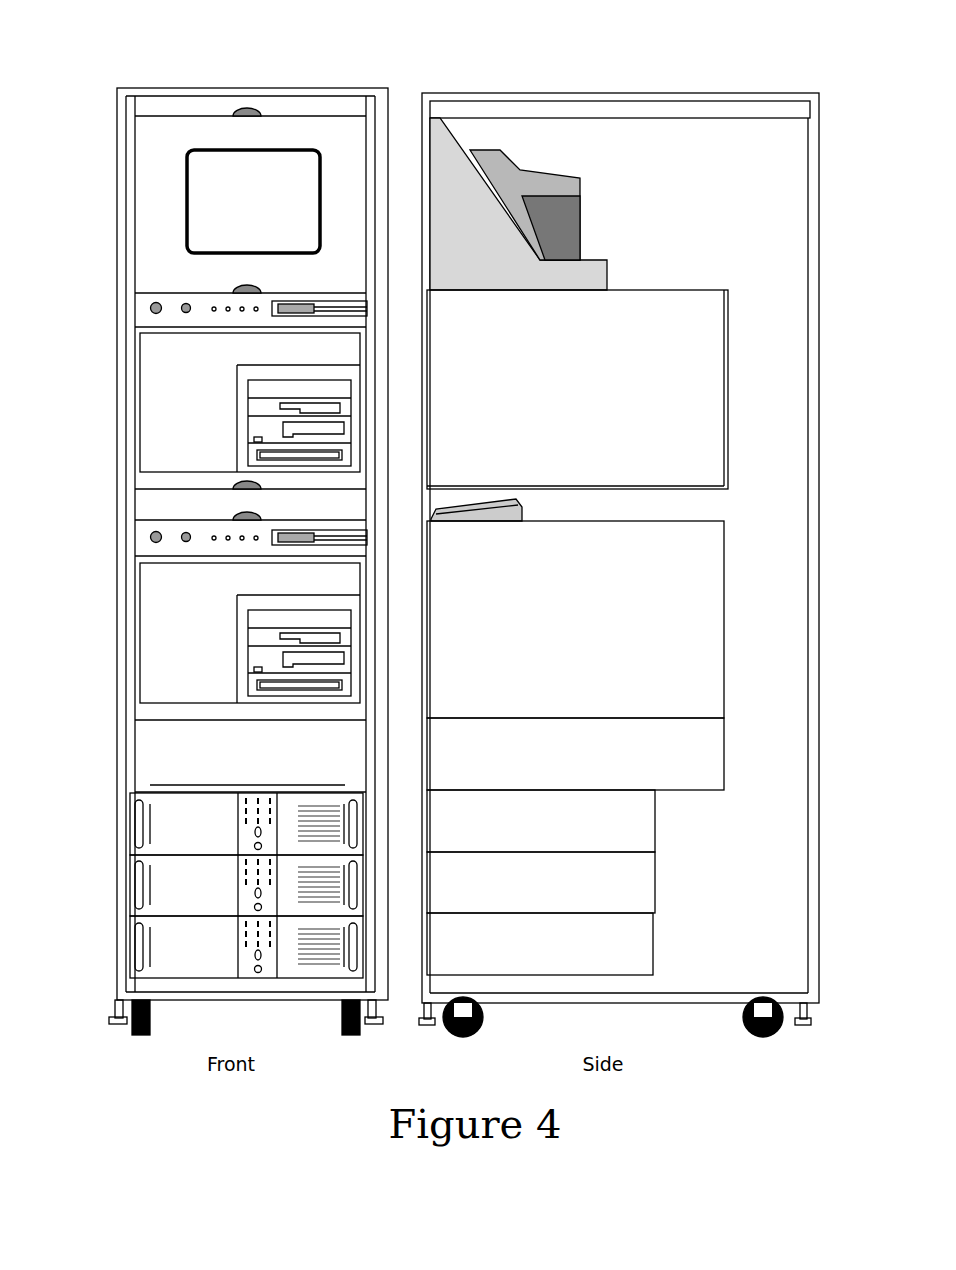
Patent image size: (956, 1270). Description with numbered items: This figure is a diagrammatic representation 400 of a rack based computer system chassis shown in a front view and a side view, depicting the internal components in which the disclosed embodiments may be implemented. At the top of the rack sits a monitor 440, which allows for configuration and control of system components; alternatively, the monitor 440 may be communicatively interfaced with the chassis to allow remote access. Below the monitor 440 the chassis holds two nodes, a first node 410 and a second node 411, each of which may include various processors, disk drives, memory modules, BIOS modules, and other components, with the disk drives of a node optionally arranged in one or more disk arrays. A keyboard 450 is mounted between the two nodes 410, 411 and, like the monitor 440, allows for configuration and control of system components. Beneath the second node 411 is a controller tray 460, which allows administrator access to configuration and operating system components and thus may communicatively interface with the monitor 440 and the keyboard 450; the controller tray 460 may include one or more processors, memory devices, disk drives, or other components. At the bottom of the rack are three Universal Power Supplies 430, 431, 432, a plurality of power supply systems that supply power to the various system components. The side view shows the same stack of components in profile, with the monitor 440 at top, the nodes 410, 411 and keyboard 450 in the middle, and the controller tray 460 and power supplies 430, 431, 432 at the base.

The diagrammatic representation 400 is at (428, 22).
The monitor 440 is at (371, 217).
The node 410 is at (434, 389).
The node 411 is at (432, 619).
The keyboard 450 is at (522, 510).
The controller tray 460 is at (429, 755).
The Universal Power Supply 430 is at (392, 822).
The Universal Power Supply 431 is at (392, 884).
The Universal Power Supply 432 is at (391, 945).